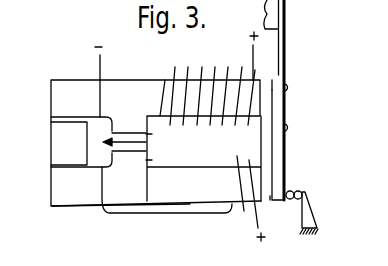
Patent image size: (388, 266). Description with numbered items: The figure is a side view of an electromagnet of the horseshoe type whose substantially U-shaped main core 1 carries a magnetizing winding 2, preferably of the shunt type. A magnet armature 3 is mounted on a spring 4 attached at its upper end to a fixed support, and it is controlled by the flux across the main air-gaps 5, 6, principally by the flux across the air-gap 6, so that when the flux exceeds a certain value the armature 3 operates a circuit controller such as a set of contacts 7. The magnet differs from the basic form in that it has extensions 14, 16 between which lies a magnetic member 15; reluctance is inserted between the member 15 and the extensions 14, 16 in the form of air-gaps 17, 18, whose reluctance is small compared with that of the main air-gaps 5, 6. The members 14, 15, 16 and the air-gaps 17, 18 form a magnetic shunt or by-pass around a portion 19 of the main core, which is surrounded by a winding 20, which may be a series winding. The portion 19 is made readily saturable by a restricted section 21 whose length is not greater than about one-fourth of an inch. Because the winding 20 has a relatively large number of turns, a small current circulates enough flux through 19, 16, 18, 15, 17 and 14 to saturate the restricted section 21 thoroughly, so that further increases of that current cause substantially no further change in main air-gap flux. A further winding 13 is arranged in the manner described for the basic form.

The main core 1 is at (170, 208).
The magnetizing winding 2 is at (201, 73).
The magnet armature 3 is at (282, 149).
The spring 4 is at (285, 58).
The main air-gap 5 is at (268, 78).
The main air-gap 6 is at (270, 199).
The contacts 7 is at (296, 190).
The winding 13 is at (239, 158).
The extension 14 is at (75, 87).
The magnetic member 15 is at (51, 147).
The extension 16 is at (92, 203).
The air-gap 17 is at (52, 119).
The air-gap 18 is at (52, 167).
The portion of main magnet core 19 is at (143, 160).
The winding 20 is at (143, 134).
The restricted section 21 is at (150, 143).